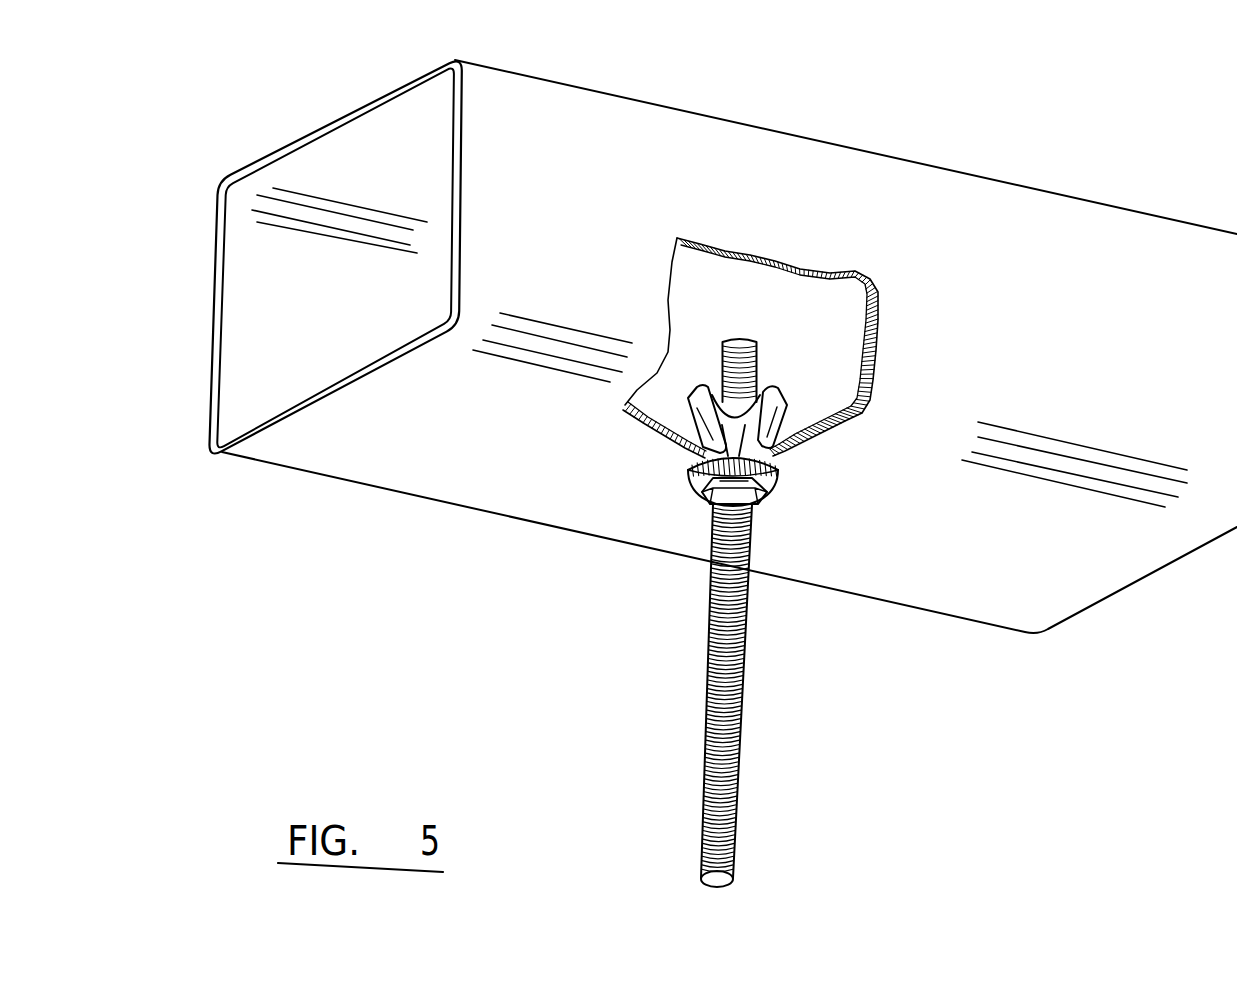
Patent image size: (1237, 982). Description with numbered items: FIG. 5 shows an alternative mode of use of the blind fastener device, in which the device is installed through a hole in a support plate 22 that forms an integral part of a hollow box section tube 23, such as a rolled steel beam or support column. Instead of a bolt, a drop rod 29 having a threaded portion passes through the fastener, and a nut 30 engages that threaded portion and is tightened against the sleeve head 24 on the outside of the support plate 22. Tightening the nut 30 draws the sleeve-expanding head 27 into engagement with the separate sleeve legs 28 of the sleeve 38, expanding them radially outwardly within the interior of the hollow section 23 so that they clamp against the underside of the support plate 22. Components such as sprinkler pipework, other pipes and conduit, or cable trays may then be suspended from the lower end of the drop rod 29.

The support plate 22 is at (989, 561).
The hollow box section tube 23 is at (1095, 268).
The sleeve head 24 is at (780, 495).
The sleeve-expanding head 27 is at (758, 390).
The sleeve legs 28 is at (703, 408).
The drop rod 29 is at (742, 713).
The nut 30 is at (757, 513).
The sleeve 38 is at (800, 423).